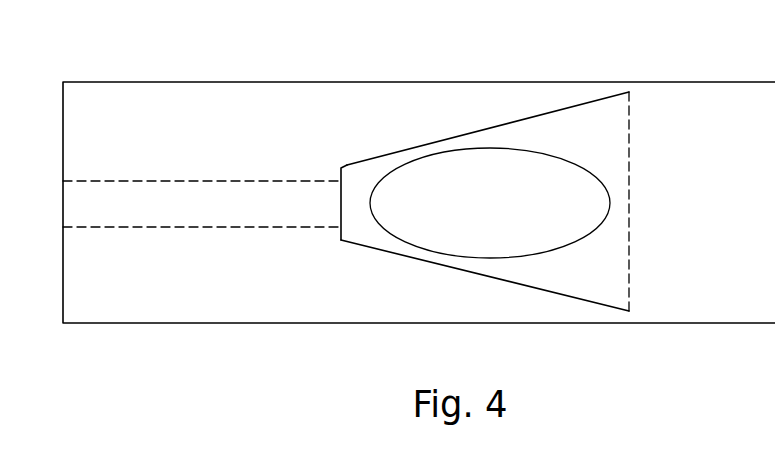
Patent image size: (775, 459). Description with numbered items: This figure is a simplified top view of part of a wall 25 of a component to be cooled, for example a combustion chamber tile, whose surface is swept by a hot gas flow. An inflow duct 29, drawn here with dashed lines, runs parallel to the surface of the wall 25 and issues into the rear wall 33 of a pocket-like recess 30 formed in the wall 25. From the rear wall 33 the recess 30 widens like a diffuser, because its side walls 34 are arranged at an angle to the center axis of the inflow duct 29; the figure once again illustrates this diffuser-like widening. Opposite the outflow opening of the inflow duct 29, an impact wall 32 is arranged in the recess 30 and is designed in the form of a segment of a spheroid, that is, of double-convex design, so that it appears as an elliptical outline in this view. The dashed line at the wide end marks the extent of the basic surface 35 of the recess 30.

The wall 25 is at (760, 206).
The inflow duct 29 is at (112, 203).
The recess 30 is at (357, 226).
The impact wall 32 is at (495, 210).
The rear wall 33 is at (350, 167).
The side walls 34 is at (476, 132).
The basic surface 35 is at (612, 130).